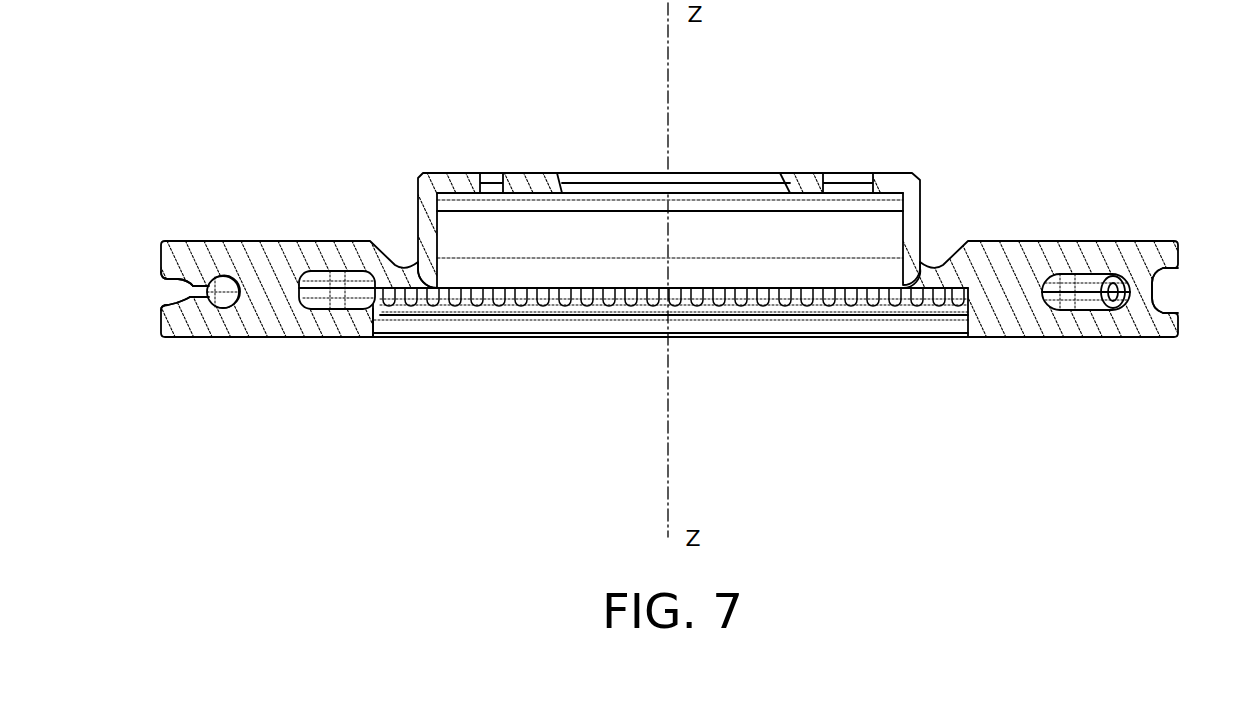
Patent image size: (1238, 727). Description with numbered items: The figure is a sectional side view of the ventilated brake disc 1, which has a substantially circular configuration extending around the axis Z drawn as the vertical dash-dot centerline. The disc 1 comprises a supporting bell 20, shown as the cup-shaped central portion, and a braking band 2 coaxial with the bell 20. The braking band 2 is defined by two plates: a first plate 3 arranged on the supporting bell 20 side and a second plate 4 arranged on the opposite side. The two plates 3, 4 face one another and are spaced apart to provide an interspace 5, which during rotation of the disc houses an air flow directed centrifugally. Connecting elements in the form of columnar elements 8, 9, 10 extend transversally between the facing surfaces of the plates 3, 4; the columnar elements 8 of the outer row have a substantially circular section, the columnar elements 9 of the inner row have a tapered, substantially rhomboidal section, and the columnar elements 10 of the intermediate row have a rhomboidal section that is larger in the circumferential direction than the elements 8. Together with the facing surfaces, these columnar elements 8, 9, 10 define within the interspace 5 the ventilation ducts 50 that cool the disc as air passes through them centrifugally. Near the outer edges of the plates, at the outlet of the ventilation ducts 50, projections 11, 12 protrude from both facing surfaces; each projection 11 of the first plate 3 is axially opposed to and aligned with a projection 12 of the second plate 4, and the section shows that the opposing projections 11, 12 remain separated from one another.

The disc 1 is at (641, 327).
The braking band 2 is at (253, 352).
The first plate 3 is at (1002, 262).
The second plate 4 is at (1005, 332).
The interspace 5 is at (1168, 293).
The columnar elements of the outer row 8 is at (215, 282).
The columnar elements of the inner row 9 is at (590, 300).
The columnar elements of the intermediate row 10 is at (273, 290).
The projection 11 is at (178, 283).
The projection 12 is at (194, 311).
The supporting bell 20 is at (808, 157).
The ventilation ducts 50 is at (1082, 287).